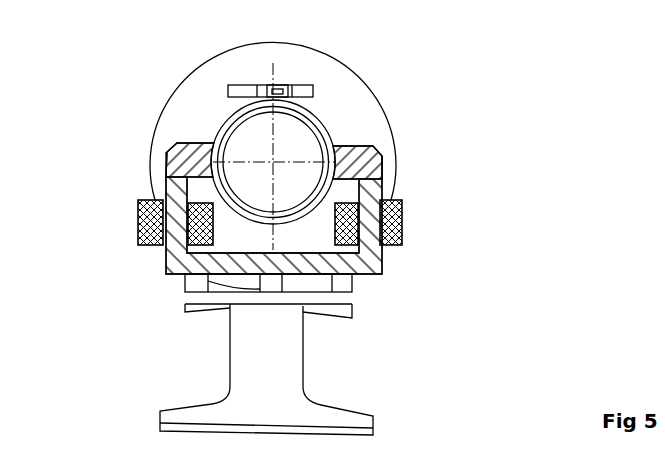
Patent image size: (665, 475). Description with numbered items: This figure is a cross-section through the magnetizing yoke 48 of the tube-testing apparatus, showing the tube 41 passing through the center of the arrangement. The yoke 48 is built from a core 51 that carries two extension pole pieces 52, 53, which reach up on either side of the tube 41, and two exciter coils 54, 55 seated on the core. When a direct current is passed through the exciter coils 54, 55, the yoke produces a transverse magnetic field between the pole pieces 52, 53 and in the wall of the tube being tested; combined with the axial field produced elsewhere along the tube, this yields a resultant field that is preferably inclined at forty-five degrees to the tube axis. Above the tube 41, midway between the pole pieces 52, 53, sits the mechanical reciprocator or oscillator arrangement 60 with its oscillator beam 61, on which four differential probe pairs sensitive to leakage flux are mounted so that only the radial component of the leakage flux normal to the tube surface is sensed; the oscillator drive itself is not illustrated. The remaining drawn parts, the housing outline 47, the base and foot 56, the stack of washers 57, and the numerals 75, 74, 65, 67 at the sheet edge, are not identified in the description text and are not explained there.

The tube 41 is at (324, 137).
The housing 47 is at (388, 152).
The magnetizing yoke 48 is at (375, 298).
The core 51 is at (164, 269).
The extension pole piece 52 is at (165, 158).
The extension pole piece 53 is at (366, 174).
The exciter coil 54 is at (139, 223).
The exciter coil 55 is at (403, 233).
The base foot 56 is at (201, 408).
The washer stack 57 is at (350, 281).
The mechanical reciprocator or oscillator arrangement 60 is at (302, 90).
The oscillator beam 61 is at (283, 92).
The element 75 is at (314, 466).
The element 74 is at (399, 467).
The element 65 is at (515, 469).
The element 67 is at (615, 470).